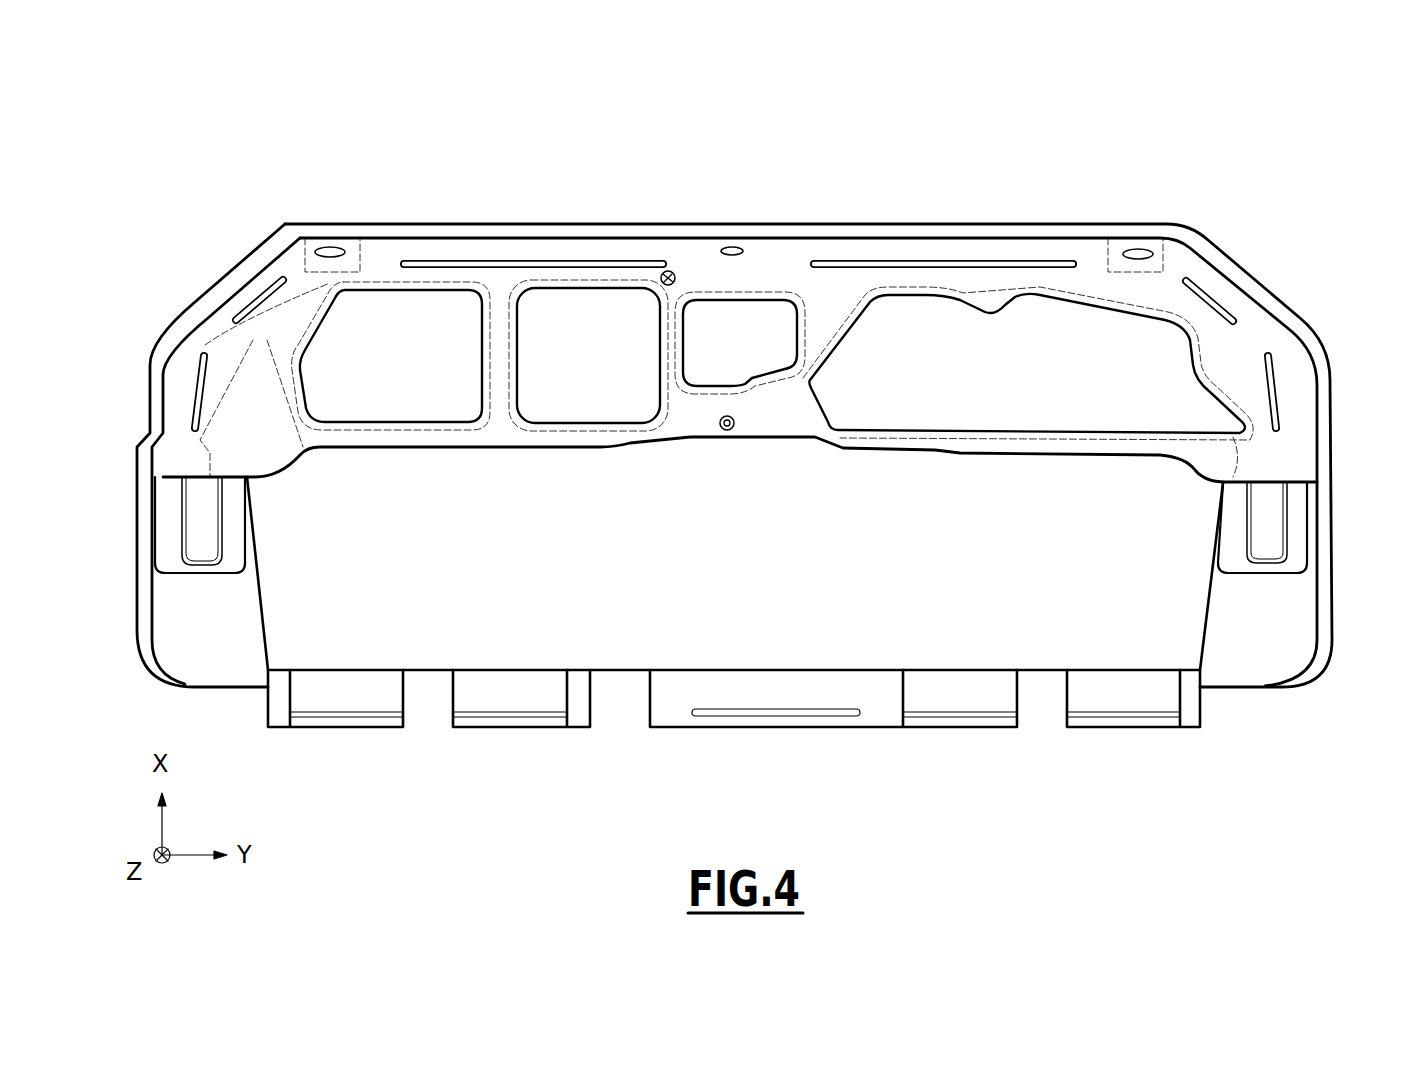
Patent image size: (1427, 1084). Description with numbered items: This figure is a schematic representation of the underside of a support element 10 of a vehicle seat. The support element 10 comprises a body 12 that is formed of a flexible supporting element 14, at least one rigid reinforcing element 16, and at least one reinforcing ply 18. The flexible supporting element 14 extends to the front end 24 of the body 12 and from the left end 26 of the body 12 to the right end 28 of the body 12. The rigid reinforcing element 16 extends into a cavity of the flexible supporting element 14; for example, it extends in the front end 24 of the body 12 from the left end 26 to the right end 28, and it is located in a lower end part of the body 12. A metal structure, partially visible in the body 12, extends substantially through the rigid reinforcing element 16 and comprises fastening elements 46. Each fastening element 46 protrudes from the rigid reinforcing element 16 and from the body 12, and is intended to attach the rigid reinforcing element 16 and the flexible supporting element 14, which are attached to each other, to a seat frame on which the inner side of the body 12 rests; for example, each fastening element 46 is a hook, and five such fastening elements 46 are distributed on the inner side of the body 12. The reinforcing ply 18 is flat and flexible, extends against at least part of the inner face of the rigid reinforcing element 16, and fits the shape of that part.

The support element 10 is at (1312, 173).
The body 12 is at (950, 188).
The flexible supporting element 14 is at (1160, 610).
The rigid reinforcing element 16 is at (1205, 310).
The reinforcing ply 18 is at (1252, 338).
The front end 24 is at (230, 215).
The left end 26 is at (1352, 408).
The right end 28 is at (120, 433).
The fastening element 46 is at (318, 247).